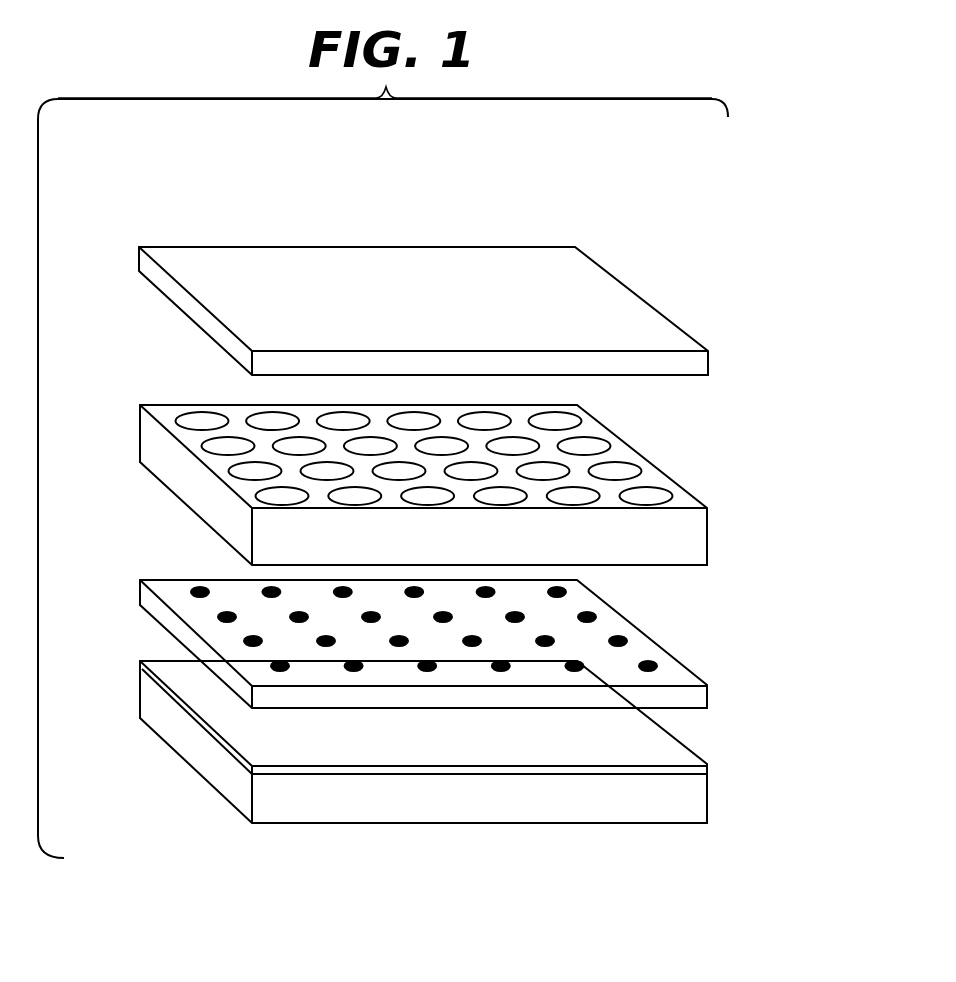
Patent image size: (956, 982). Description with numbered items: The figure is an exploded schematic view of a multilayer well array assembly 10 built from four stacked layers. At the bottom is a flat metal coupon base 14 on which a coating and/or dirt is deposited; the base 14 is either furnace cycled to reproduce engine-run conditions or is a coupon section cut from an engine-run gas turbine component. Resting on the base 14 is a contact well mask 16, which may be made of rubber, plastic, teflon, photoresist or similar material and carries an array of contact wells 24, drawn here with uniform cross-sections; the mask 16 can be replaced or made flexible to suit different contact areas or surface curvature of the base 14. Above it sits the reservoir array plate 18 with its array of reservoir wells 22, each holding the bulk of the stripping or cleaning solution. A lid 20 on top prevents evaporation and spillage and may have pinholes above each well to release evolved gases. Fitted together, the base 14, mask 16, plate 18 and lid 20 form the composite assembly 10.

The multilayer well array assembly 10 is at (720, 418).
The flat metal coupon base 14 is at (707, 797).
The contact well mask 16 is at (707, 695).
The reservoir array plate 18 is at (707, 540).
The lid 20 is at (633, 290).
The reservoir wells 22 is at (230, 472).
The contact wells 24 is at (593, 614).